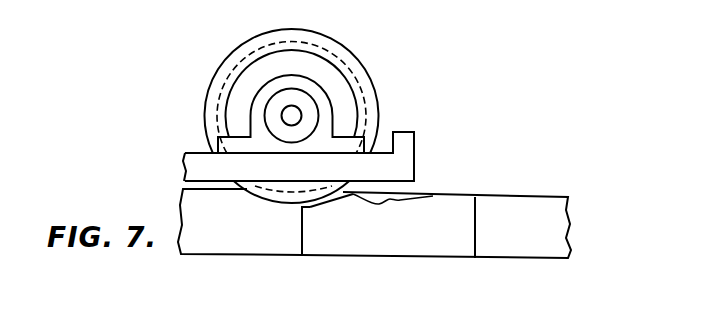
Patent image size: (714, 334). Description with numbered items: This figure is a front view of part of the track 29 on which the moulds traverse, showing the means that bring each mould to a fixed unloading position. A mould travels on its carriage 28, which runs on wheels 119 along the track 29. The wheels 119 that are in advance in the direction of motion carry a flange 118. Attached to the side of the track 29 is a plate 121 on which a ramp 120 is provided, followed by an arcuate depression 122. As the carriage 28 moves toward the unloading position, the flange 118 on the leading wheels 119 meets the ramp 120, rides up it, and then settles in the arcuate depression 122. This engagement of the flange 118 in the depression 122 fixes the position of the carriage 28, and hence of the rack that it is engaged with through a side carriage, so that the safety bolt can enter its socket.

The carriage 28 is at (308, 172).
The track 29 is at (208, 243).
The flange 118 is at (289, 201).
The wheels 119 is at (260, 195).
The ramp 120 is at (330, 199).
The plate 121 is at (355, 245).
The arcuate depression 122 is at (392, 201).